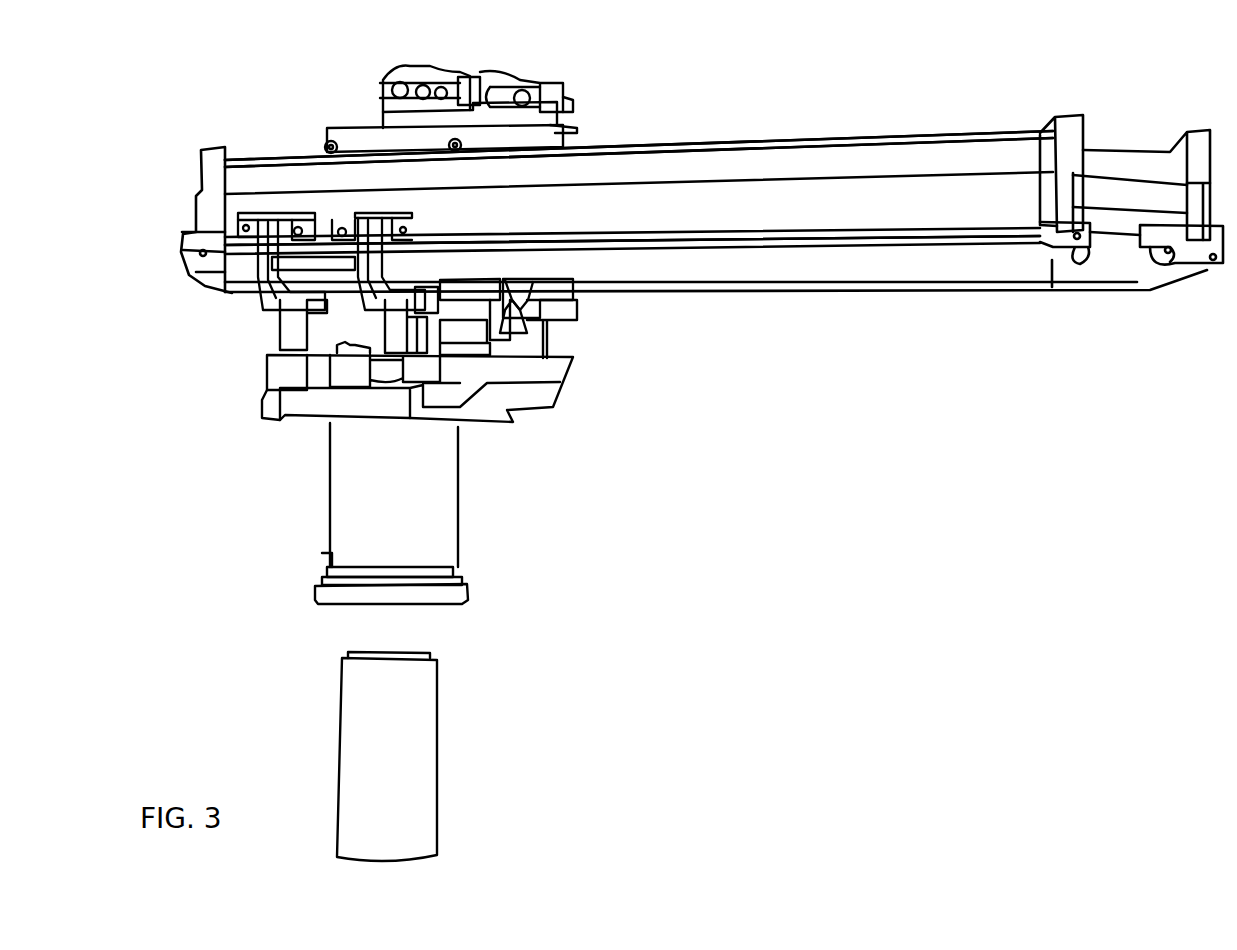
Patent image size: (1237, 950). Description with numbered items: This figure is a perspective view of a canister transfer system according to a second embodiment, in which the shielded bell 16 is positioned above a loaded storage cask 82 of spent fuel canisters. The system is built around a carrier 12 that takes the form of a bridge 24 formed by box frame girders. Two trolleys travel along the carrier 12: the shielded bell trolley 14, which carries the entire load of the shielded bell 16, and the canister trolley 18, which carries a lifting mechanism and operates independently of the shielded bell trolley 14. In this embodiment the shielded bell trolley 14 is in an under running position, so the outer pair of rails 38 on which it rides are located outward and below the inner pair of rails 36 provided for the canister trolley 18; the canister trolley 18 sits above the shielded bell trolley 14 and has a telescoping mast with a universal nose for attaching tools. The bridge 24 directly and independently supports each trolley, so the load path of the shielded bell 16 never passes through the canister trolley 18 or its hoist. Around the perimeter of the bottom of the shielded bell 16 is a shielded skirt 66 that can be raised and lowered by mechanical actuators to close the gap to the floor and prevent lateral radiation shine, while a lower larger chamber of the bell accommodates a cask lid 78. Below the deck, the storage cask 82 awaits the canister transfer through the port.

The carrier 12 is at (877, 138).
The shielded bell trolley 14 is at (553, 395).
The shielded bell 16 is at (458, 508).
The canister trolley 18 is at (530, 82).
The bridge 24 is at (773, 140).
The first or inner pair of rails 36 is at (692, 142).
The second or outer pair of rails 38 is at (763, 225).
The shielded skirt 66 is at (465, 592).
The cask lid 78 is at (408, 652).
The storage cask 82 is at (437, 765).